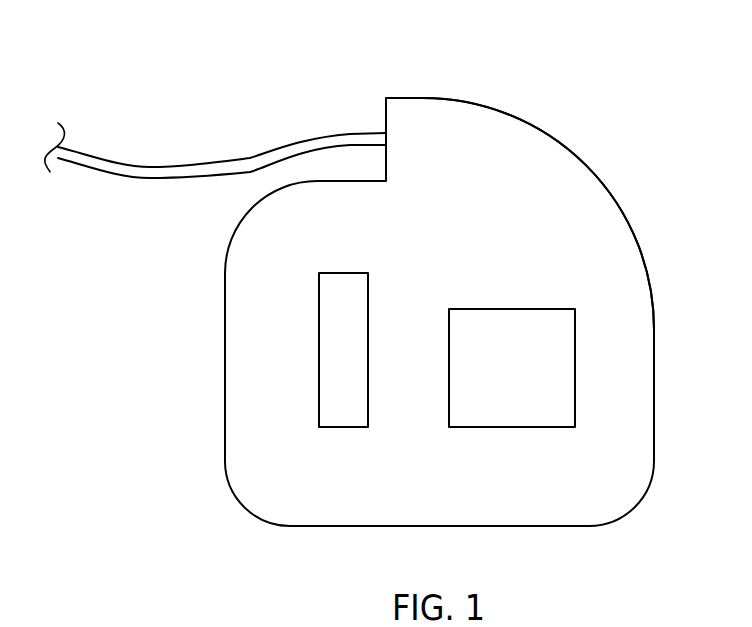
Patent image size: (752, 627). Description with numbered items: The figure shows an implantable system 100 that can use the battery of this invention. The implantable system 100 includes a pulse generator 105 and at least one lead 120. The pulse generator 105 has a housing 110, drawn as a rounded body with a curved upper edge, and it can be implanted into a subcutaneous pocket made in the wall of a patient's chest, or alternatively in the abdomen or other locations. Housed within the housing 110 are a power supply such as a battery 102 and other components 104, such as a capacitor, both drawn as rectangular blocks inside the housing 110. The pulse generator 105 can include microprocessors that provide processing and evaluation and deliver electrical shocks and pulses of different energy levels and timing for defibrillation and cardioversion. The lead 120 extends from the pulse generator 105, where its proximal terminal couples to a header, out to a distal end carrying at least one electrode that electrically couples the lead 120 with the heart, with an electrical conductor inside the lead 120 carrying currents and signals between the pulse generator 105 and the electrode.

The implantable system 100 is at (577, 75).
The pulse generator 105 is at (620, 280).
The housing 110 is at (584, 165).
The lead 120 is at (275, 148).
The battery 102 is at (343, 273).
The other components 104 is at (511, 308).